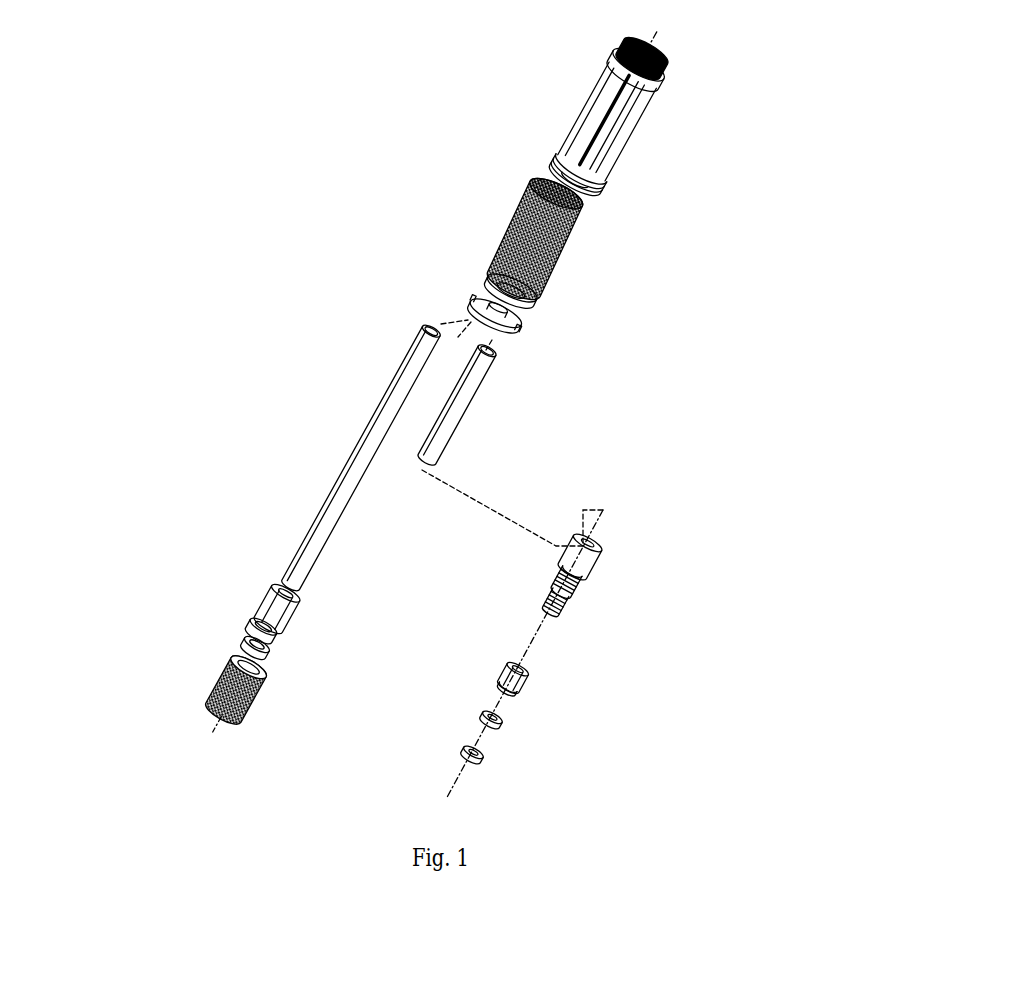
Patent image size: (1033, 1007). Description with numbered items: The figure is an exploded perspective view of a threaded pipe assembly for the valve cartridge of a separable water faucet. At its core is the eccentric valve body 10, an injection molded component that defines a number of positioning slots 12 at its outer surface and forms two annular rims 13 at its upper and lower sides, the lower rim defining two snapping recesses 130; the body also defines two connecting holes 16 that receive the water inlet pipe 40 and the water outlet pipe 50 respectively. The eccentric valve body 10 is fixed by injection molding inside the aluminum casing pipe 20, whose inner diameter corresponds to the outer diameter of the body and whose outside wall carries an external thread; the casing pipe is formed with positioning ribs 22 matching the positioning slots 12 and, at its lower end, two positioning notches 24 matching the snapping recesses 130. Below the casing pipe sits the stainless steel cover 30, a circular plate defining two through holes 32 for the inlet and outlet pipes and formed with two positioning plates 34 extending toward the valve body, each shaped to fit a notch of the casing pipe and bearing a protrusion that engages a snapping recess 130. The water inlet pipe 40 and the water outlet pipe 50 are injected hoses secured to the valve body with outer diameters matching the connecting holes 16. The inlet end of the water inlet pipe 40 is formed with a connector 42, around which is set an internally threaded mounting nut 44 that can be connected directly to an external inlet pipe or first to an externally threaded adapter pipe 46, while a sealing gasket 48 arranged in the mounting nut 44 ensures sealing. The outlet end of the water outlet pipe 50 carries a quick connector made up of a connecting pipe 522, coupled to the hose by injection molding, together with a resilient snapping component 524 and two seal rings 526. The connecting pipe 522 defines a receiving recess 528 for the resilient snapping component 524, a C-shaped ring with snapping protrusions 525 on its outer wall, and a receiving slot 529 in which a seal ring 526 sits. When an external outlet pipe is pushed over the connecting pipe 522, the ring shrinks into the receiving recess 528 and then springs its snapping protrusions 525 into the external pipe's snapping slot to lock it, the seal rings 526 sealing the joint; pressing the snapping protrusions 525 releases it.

The eccentric valve body 10 is at (658, 70).
The positioning slots 12 is at (620, 118).
The annular rims 13 is at (588, 190).
The snapping recesses 130 is at (570, 165).
The connecting holes 16 is at (560, 173).
The aluminum casing pipe 20 is at (585, 225).
The positioning ribs 22 is at (520, 305).
The positioning notches 24 is at (505, 298).
The stainless steel cover 30 is at (478, 306).
The through holes 32 is at (475, 313).
The positioning plates 34 is at (500, 328).
The water inlet pipe 40 is at (375, 435).
The connector 42 is at (260, 632).
The mounting nut 44 is at (276, 600).
The adapter pipe 46 is at (224, 718).
The sealing gasket 48 is at (253, 652).
The water outlet pipe 50 is at (457, 425).
The connecting pipe 522 is at (598, 575).
The resilient snapping component 524 is at (528, 686).
The snapping protrusions 525 is at (508, 680).
The seal rings 526 is at (480, 760).
The receiving recess 528 is at (555, 586).
The receiving slot 529 is at (545, 612).